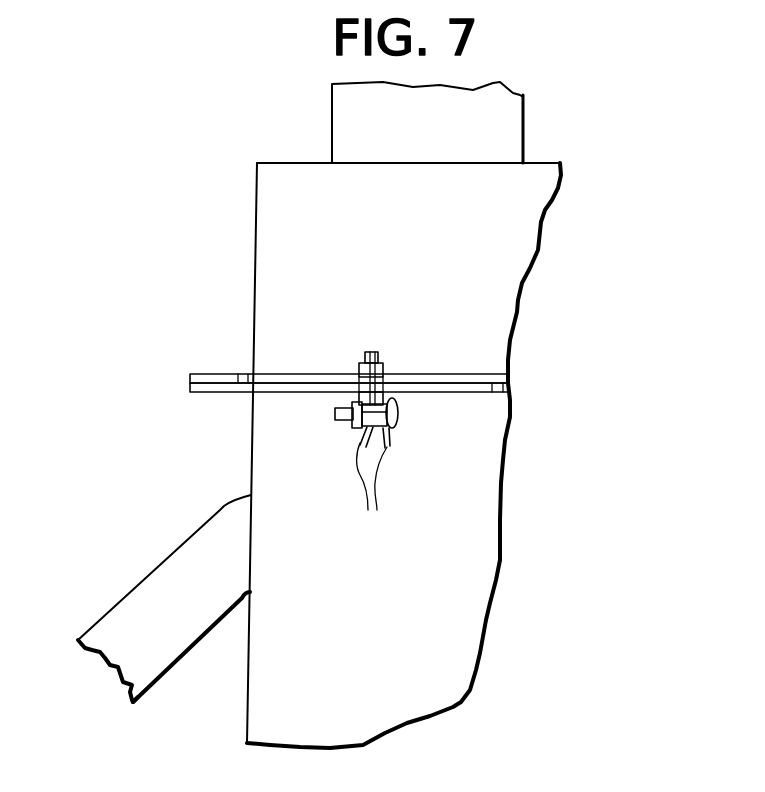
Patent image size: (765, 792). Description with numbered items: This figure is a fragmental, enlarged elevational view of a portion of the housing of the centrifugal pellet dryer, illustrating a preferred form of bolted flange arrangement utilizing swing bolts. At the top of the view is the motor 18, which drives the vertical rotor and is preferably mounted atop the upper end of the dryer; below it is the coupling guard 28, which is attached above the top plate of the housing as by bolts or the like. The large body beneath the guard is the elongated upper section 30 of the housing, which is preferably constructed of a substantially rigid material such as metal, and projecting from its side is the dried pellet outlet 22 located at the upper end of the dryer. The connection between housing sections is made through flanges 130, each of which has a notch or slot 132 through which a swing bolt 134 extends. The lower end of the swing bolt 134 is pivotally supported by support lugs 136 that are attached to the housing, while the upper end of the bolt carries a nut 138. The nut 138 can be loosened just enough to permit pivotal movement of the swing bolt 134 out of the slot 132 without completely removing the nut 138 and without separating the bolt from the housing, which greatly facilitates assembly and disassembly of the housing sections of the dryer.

The motor 18 is at (508, 124).
The coupling guard 28 is at (535, 207).
The upper section 30 is at (468, 602).
The dried pellet outlet 22 is at (140, 587).
The flange 130 is at (475, 391).
The notch or slot 132 is at (363, 381).
The swing bolt 134 is at (375, 351).
The support lugs 136 is at (369, 485).
The nut 138 is at (385, 368).